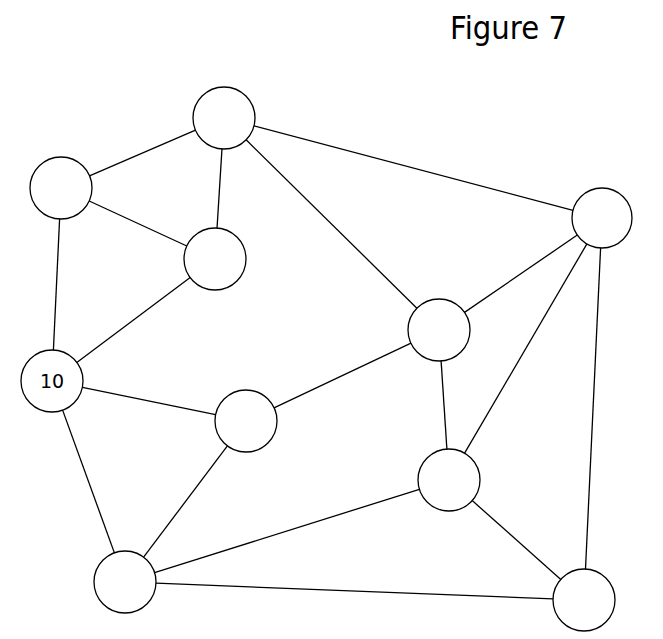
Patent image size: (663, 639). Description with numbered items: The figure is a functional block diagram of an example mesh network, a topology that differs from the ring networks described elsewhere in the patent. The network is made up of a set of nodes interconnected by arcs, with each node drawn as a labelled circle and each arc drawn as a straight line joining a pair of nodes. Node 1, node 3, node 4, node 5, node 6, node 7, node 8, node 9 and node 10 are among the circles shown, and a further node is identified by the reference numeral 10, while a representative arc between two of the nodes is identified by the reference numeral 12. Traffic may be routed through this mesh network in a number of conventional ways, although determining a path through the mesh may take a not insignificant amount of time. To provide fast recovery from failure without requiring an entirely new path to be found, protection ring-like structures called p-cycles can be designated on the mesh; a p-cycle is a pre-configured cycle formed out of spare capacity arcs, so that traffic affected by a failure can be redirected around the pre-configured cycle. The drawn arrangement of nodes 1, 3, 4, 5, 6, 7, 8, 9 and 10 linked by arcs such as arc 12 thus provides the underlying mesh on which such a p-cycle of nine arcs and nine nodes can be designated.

The node 1 is at (61, 188).
The node 3 is at (215, 259).
The node 4 is at (246, 421).
The node 5 is at (125, 582).
The node 6 is at (439, 330).
The node 7 is at (602, 218).
The node 8 is at (449, 480).
The node 9 is at (584, 600).
The node 10 is at (250, 101).
The link 12 is at (410, 170).